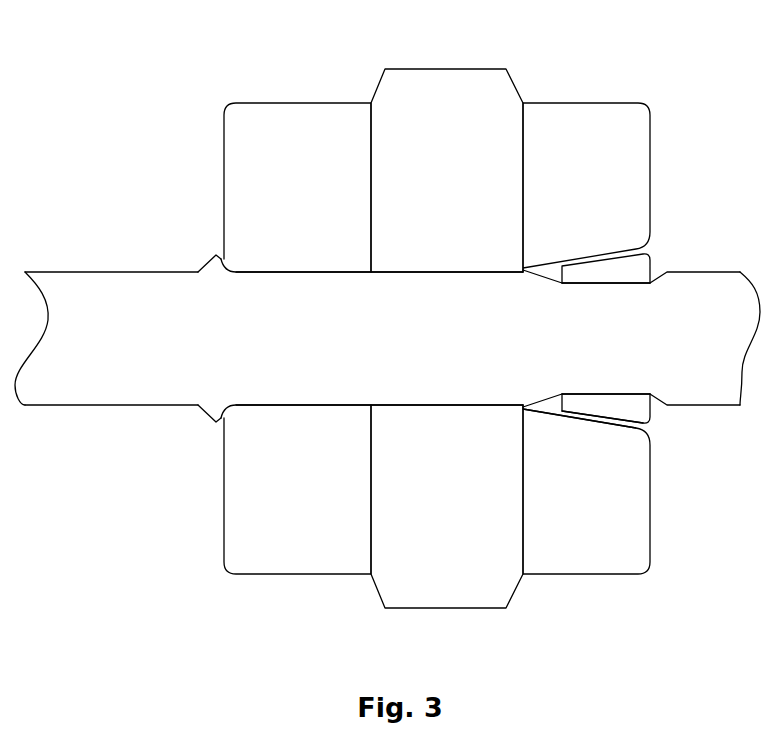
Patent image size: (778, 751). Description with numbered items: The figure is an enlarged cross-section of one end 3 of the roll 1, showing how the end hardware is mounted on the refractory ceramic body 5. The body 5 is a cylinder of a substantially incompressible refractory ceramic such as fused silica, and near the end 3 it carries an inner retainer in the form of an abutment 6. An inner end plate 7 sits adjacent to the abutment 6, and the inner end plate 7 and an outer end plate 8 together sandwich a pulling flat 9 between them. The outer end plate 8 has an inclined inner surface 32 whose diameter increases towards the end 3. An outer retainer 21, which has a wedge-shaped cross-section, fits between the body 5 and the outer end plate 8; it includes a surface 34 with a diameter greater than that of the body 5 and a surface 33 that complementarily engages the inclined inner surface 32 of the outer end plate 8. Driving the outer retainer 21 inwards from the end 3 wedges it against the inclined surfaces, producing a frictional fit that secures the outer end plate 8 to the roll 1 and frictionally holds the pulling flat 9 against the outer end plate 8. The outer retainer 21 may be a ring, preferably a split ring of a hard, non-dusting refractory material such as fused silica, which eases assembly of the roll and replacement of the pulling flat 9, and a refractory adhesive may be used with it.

The roll 1 is at (116, 105).
The end 3 is at (730, 292).
The body 5 is at (269, 338).
The abutment 6 is at (205, 265).
The inner end plate 7 is at (296, 338).
The outer end plate 8 is at (586, 338).
The pulling flat 9 is at (447, 338).
The outer retainer 21 is at (649, 261).
The inclined inner surface 32 is at (577, 428).
The surface 33 is at (610, 428).
The surface 34 is at (598, 283).